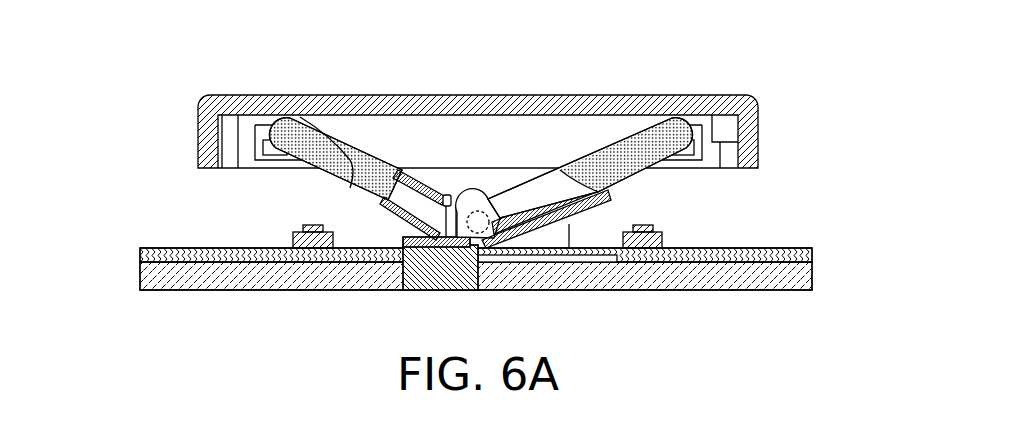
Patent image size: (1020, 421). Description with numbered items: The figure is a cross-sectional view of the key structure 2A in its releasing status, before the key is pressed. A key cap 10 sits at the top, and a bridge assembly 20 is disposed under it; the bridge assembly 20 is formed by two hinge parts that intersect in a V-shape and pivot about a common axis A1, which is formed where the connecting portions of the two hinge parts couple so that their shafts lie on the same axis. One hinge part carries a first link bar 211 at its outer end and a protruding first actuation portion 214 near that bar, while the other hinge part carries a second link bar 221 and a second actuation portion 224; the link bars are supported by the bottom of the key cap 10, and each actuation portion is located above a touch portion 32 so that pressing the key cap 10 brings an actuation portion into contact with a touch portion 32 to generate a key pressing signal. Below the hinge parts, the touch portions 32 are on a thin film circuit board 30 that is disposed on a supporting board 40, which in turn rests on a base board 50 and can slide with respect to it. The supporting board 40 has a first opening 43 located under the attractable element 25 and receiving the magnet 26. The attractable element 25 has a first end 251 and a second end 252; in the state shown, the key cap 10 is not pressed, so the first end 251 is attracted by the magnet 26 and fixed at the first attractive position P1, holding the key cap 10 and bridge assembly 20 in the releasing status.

The key structure 2A is at (113, 71).
The key cap 10 is at (734, 104).
The bridge assembly 20 is at (376, 142).
The first link bar 211 is at (332, 129).
The first actuation portion 214 is at (338, 138).
The first end 251 is at (445, 197).
The axis A1 is at (479, 211).
The attractable element 25 is at (508, 216).
The second end 252 is at (575, 197).
The second actuation portion 224 is at (600, 140).
The second link bar 221 is at (590, 138).
The touch portion 32 is at (290, 242).
The thin film circuit board 30 is at (140, 249).
The supporting board 40 is at (140, 263).
The first opening 43 is at (553, 256).
The base board 50 is at (449, 280).
The first attractive position P1 is at (437, 252).
The magnet 26 is at (470, 262).